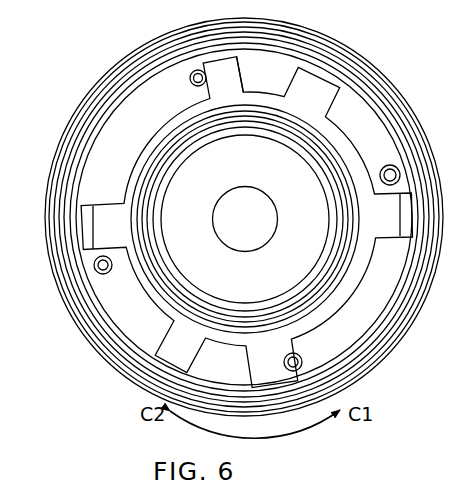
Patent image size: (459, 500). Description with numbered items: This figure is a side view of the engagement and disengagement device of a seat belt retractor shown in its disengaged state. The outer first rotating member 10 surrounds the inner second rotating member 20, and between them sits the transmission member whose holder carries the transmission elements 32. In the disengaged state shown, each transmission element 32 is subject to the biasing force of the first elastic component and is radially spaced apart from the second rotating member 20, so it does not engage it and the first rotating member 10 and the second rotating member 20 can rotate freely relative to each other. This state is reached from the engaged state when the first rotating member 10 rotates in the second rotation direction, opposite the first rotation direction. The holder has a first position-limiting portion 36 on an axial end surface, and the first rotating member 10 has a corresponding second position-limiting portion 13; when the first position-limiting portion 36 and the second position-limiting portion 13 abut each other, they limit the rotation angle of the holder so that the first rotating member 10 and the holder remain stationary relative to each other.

The first rotating member 10 is at (128, 147).
The second position-limiting portion 13 is at (193, 78).
The second rotating member 20 is at (188, 190).
The transmission element 32 is at (143, 218).
The first position-limiting portion 36 is at (222, 80).